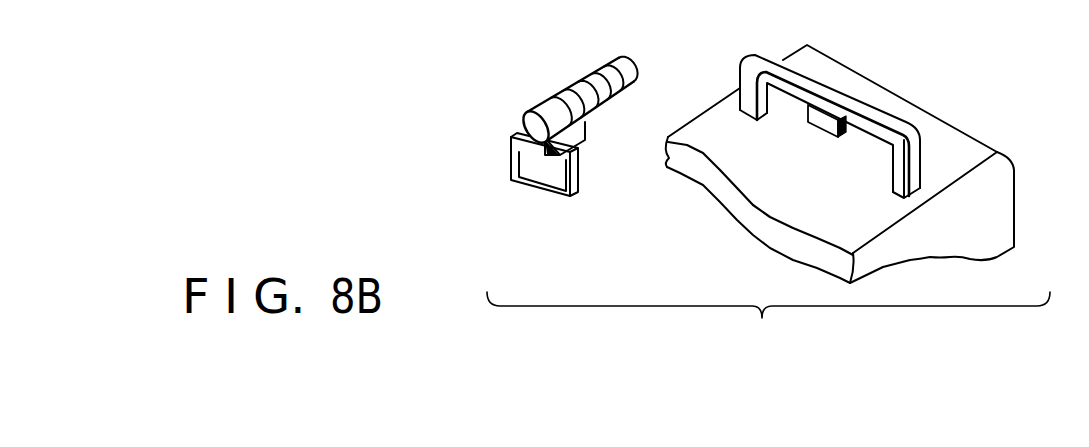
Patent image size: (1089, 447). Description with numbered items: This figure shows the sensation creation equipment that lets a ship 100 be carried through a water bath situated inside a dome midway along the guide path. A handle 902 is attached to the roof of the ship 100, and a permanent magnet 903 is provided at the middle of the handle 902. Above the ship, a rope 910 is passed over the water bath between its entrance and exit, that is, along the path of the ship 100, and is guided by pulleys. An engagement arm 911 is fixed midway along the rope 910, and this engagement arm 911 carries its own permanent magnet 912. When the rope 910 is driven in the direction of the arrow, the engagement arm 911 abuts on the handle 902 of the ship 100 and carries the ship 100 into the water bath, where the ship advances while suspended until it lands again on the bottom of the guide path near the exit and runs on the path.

The ship 100 is at (1006, 182).
The handle 902 is at (907, 120).
The permanent magnet 903 is at (821, 120).
The rope 910 is at (582, 76).
The engagement arm 911 is at (588, 163).
The permanent magnet 912 is at (556, 172).